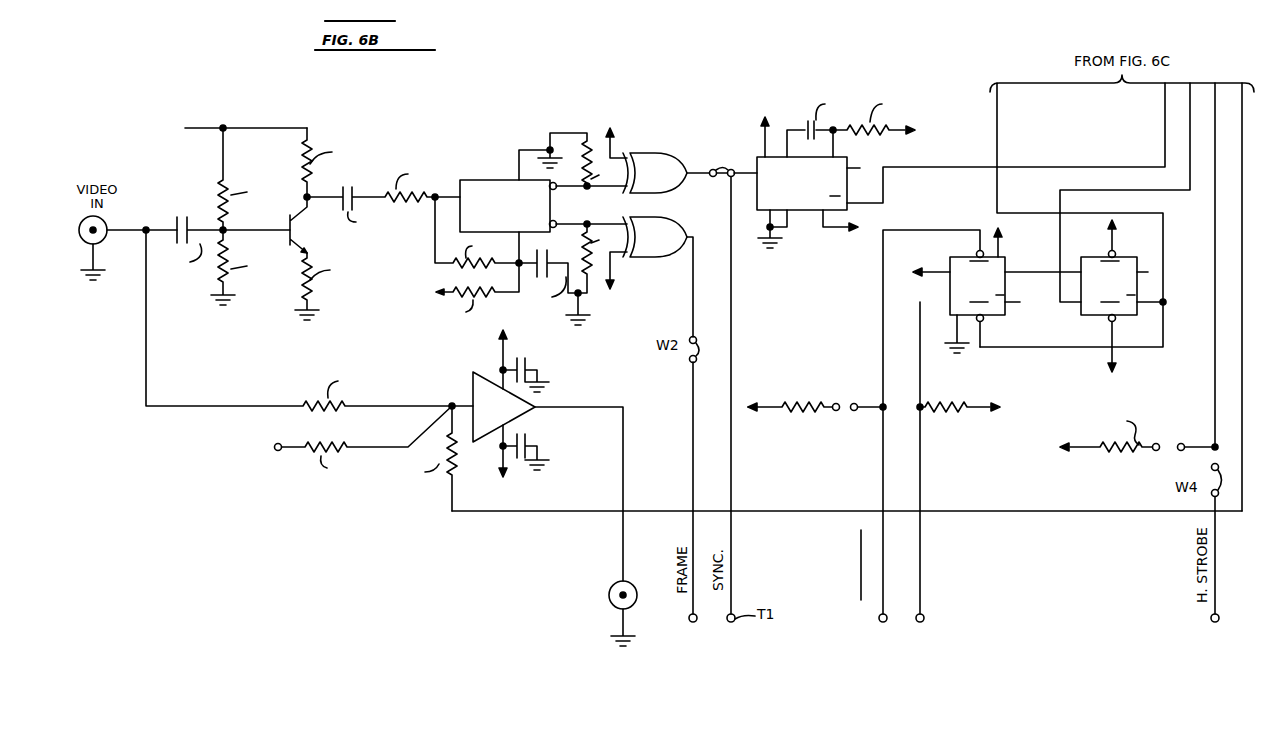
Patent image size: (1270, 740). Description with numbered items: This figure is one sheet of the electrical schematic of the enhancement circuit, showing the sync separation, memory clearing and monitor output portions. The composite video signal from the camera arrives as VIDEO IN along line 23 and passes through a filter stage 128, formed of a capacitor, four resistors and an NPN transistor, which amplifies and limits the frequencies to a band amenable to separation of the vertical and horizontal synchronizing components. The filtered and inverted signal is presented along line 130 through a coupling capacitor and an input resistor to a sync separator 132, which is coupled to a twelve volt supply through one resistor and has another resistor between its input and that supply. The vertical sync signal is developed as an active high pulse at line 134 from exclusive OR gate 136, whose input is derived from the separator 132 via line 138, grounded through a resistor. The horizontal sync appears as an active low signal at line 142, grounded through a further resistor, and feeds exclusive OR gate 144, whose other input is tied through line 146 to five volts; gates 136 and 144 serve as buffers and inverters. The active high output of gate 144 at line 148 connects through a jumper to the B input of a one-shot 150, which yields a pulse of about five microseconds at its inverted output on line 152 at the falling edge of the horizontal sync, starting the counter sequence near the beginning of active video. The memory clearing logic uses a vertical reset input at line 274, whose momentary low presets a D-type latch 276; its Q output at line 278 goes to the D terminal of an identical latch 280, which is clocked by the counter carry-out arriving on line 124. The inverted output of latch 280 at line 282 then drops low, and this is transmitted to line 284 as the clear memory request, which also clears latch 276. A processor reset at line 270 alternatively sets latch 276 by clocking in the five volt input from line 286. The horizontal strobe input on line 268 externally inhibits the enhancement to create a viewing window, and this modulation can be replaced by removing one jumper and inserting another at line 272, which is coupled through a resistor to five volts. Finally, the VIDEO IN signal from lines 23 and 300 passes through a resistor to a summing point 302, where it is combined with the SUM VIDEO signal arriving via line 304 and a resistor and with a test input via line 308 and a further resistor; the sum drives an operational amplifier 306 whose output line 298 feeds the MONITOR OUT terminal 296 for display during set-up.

The line 23 is at (140, 228).
The filter stage 128 is at (204, 185).
The line 130 is at (334, 194).
The sync separator 132 is at (500, 180).
The line 134 is at (693, 317).
The exclusive OR gate 136 is at (652, 258).
The line 138 is at (612, 218).
The line 142 is at (572, 190).
The exclusive OR gate 144 is at (660, 152).
The line 146 is at (608, 150).
The line 148 is at (689, 180).
The one-shot 150 is at (850, 157).
The line 152 is at (885, 189).
The line 124 is at (1119, 190).
The line 268 is at (1215, 251).
The line 270 is at (920, 479).
The line 272 is at (1195, 449).
The line 274 is at (883, 479).
The D-type latch 276 is at (999, 322).
The line 278 is at (1014, 272).
The latch 280 is at (1104, 321).
The line 282 is at (1163, 302).
The line 284 is at (997, 124).
The line 286 is at (944, 270).
The MONITOR OUT terminal 296 is at (602, 612).
The output line 298 is at (623, 456).
The line 300 is at (215, 405).
The summing point 302 is at (452, 405).
The line 304 is at (1110, 512).
The operational amplifier 306 is at (531, 414).
The line 308 is at (396, 444).